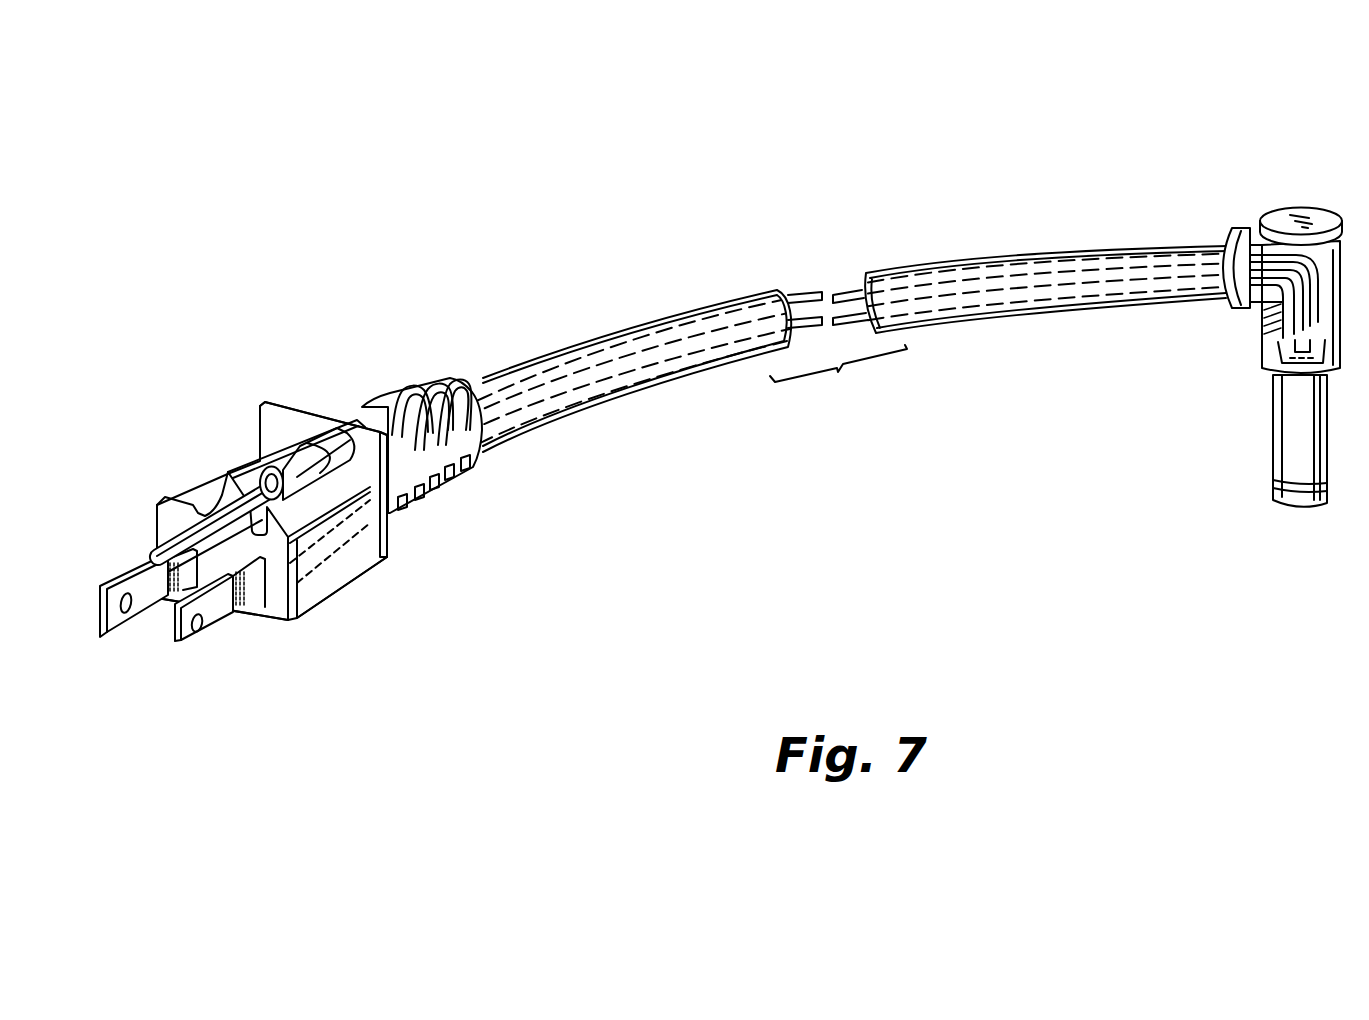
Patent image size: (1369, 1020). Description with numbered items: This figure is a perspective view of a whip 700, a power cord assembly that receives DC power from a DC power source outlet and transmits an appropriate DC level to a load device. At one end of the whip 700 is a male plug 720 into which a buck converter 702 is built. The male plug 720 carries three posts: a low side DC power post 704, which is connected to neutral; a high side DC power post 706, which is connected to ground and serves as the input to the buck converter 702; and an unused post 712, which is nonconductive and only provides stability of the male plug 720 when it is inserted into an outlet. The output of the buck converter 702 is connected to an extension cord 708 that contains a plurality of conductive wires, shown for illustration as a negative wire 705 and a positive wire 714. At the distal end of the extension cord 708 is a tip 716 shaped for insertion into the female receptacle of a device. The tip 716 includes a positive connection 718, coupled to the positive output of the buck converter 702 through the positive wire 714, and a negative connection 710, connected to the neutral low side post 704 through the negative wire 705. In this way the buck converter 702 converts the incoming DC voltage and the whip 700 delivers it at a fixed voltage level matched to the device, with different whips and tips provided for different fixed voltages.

The whip 700 is at (348, 218).
The buck converter 702 is at (300, 440).
The low side DC power post 704 is at (217, 617).
The negative wire 705 is at (846, 326).
The high side DC power post 706 is at (152, 549).
The extension cord 708 is at (652, 320).
The negative connection 710 is at (1283, 440).
The unused post 712 is at (112, 582).
The positive wire 714 is at (849, 292).
The tip 716 is at (1303, 212).
The positive connection 718 is at (1290, 520).
The male plug 720 is at (165, 459).